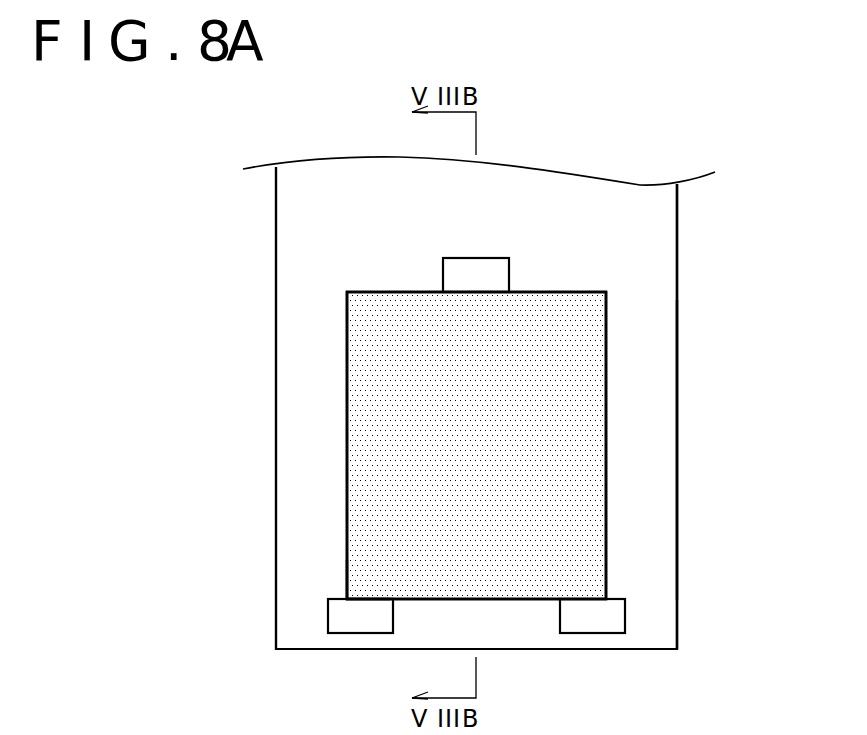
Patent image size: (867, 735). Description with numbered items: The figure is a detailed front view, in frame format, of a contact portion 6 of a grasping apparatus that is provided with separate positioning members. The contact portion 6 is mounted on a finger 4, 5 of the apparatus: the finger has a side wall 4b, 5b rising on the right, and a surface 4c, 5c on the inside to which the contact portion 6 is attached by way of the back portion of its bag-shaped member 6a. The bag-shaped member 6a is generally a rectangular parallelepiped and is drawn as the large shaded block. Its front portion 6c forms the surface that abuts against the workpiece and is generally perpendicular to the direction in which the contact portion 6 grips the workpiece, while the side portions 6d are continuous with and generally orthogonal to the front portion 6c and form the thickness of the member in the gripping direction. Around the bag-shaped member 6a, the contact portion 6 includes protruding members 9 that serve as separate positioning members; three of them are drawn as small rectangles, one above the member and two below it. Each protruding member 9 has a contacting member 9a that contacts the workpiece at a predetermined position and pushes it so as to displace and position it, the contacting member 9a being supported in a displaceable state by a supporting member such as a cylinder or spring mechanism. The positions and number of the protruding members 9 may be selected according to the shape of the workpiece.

The finger 4 is at (210, 247).
The finger 5 is at (218, 243).
The side wall of finger 4b is at (677, 265).
The side wall of finger 5b is at (677, 265).
The surface of finger 4c is at (660, 398).
The surface of finger 5c is at (660, 398).
The contact portion 6 is at (632, 516).
The bag-shaped member 6a is at (571, 478).
The front portion 6c is at (380, 560).
The side portions 6d is at (563, 290).
The protruding member 9 is at (423, 276).
The contacting member 9a is at (475, 258).